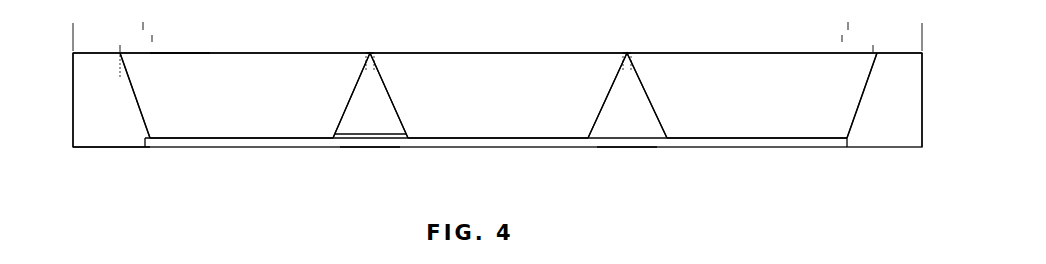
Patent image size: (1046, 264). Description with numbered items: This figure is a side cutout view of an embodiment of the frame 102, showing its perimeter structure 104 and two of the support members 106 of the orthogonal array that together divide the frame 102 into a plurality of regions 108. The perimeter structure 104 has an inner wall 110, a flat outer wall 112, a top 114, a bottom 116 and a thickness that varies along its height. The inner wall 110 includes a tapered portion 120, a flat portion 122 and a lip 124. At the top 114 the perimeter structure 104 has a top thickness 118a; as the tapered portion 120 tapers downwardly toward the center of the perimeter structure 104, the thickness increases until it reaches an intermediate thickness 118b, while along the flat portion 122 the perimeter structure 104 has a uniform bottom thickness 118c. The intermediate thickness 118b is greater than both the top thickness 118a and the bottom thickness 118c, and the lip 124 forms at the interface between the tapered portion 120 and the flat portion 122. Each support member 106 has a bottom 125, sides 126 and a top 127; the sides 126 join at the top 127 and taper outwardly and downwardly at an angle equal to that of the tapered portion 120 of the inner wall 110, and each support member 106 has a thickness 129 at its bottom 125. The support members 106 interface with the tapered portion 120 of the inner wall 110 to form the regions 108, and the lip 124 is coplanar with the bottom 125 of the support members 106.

The frame 102 is at (598, 44).
The perimeter structure 104 is at (289, 53).
The support members 106 is at (369, 52).
The regions 108 is at (498, 126).
The inner wall 110 is at (131, 80).
The outer wall 112 is at (73, 104).
The top 114 is at (178, 52).
The bottom 116 is at (103, 148).
The top thickness 118a is at (73, 48).
The intermediate thickness 118b is at (73, 38).
The bottom thickness 118c is at (73, 26).
The tapered portion 120 is at (136, 97).
The flat portion 122 is at (143, 143).
The lip 124 is at (144, 137).
The bottom 125 is at (367, 148).
The sides 126 is at (351, 96).
The top 127 is at (372, 52).
The thickness 129 is at (407, 134).